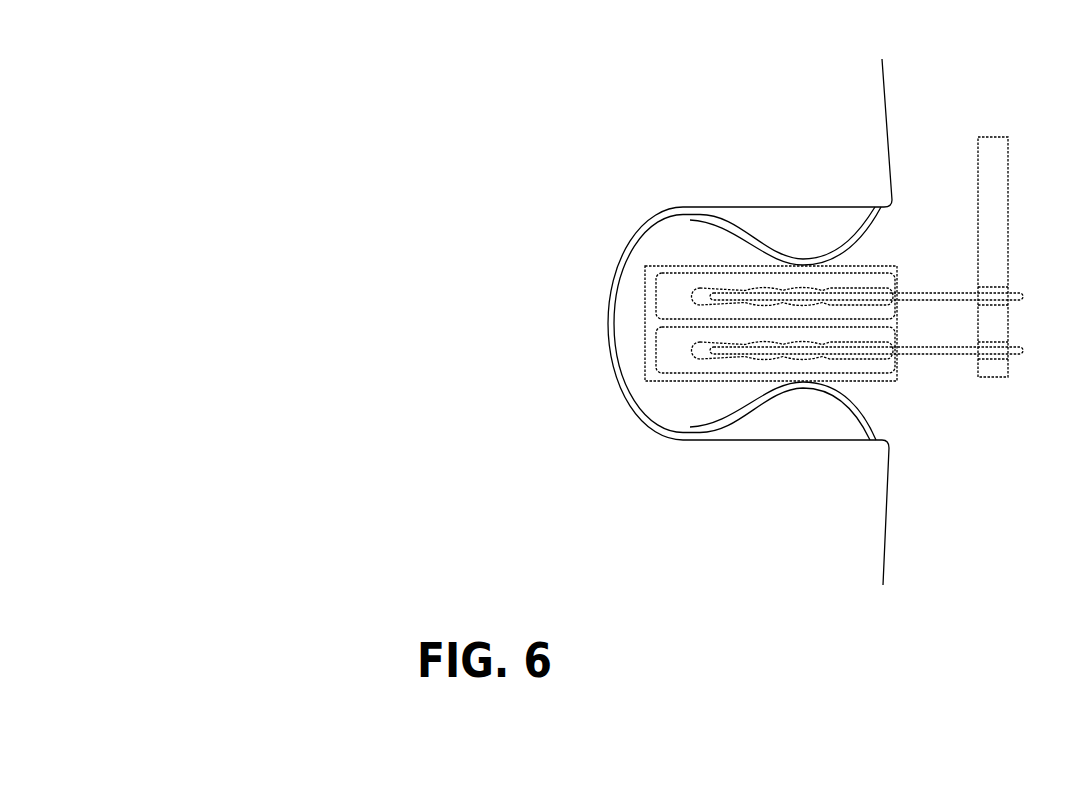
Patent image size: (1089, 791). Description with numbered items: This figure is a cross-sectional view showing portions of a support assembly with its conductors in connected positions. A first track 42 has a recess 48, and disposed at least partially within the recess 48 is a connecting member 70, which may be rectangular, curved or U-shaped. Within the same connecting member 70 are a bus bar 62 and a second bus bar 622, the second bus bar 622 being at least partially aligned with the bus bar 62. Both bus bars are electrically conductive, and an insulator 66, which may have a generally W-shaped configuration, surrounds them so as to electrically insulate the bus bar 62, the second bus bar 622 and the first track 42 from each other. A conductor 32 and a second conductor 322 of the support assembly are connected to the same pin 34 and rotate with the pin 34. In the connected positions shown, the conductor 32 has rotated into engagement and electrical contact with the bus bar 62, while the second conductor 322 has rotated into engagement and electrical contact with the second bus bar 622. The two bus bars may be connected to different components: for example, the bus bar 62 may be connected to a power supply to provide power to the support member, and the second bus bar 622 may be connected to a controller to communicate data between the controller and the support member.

The first track 42 is at (865, 110).
The recess 48 is at (608, 320).
The connecting member 70 is at (740, 238).
The insulator 66 is at (886, 257).
The bus bar 62 is at (880, 284).
The second bus bar 622 is at (897, 333).
The conductor 32 is at (955, 293).
The second conductor 322 is at (955, 352).
The pin 34 is at (1013, 197).